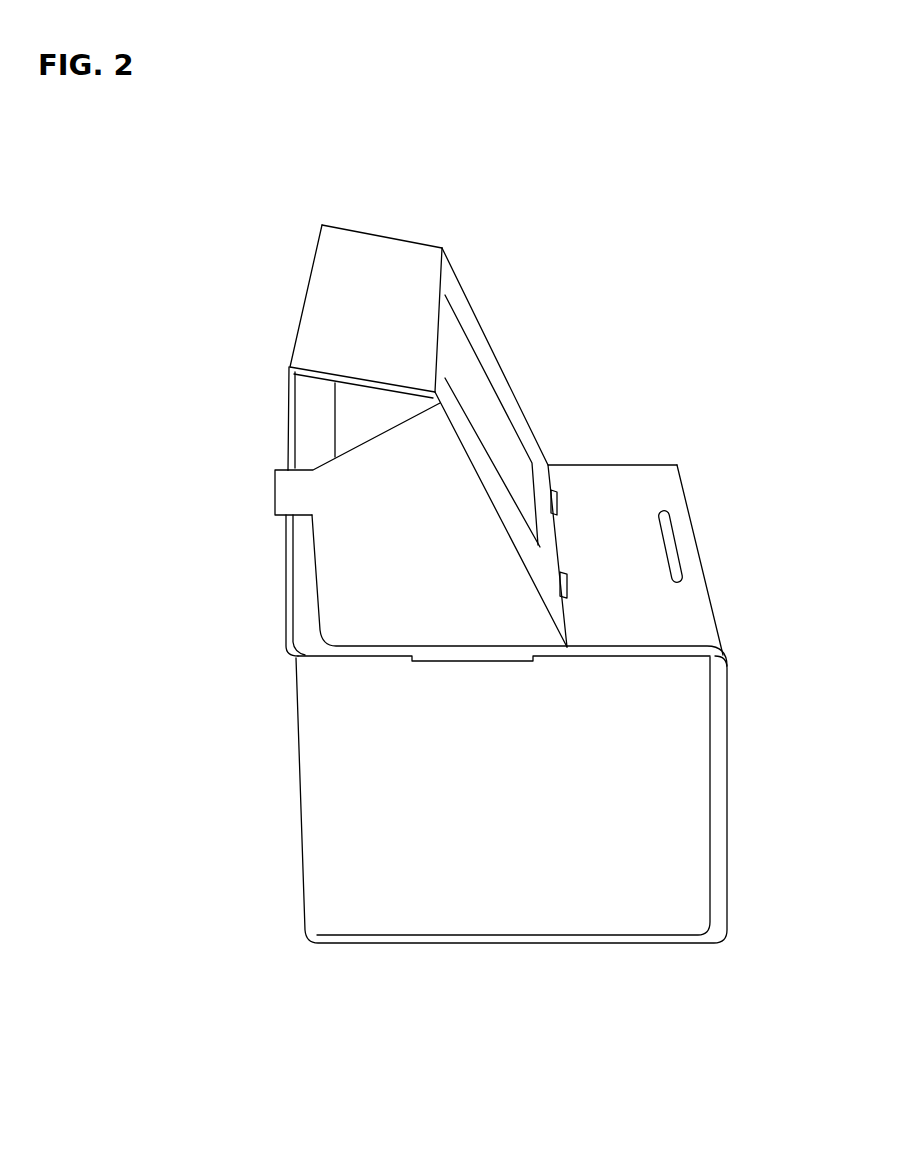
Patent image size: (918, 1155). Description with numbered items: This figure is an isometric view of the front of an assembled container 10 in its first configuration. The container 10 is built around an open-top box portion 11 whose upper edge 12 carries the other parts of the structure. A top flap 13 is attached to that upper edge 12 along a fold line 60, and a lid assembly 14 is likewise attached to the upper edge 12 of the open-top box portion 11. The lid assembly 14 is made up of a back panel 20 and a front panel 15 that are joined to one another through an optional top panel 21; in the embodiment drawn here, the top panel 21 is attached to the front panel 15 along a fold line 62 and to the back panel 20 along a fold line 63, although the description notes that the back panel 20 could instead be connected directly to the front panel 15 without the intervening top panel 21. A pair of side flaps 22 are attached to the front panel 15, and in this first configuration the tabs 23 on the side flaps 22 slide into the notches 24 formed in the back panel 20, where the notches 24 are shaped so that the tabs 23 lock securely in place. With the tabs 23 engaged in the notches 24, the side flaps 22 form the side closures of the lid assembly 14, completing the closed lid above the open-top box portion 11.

The container 10 is at (489, 776).
The open-top box portion 11 is at (610, 888).
The upper edge 12 is at (693, 528).
The top flap 13 is at (611, 502).
The lid assembly 14 is at (287, 587).
The front panel 15 is at (480, 350).
The back panel 20 is at (317, 396).
The top panel 21 is at (370, 255).
The side flaps 22 is at (380, 560).
The tabs 23 is at (292, 500).
The notches 24 is at (288, 472).
The fold line 60 is at (717, 617).
The fold line 62 is at (446, 268).
The fold line 63 is at (307, 300).